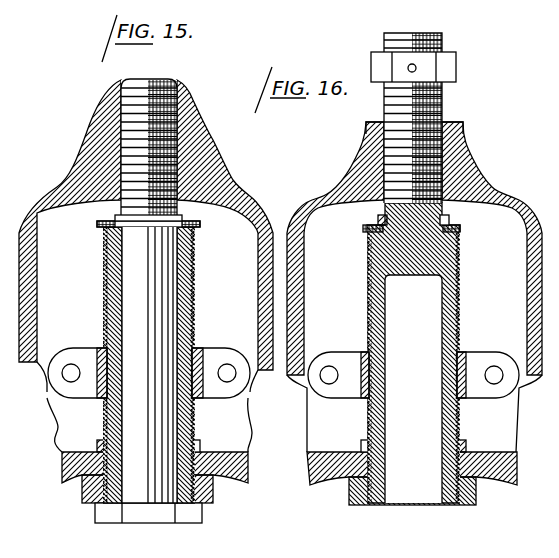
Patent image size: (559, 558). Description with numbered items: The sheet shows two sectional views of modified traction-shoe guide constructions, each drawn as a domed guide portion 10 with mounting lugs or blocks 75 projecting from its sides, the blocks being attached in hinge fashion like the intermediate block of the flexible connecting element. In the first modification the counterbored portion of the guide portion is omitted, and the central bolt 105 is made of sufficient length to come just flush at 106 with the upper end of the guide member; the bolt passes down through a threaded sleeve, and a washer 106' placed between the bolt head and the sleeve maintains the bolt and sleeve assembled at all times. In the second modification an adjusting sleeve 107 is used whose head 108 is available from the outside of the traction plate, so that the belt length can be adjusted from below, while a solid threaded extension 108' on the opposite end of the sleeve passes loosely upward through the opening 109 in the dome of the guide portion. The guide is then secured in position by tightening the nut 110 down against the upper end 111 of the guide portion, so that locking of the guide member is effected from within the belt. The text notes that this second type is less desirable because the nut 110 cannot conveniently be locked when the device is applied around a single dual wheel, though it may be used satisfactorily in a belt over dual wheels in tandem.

In FIG. 15, the housing body 10 is at (136, 301).
In FIG. 15, the intermediate block 75 is at (202, 350).
In FIG. 16, the intermediate block 75 is at (466, 352).
In FIG. 15, the central bolt 105 is at (138, 277).
In FIG. 15, the upper end of the guide member 106 is at (171, 288).
In FIG. 15, the washer 106' is at (179, 231).
In FIG. 16, the adjusting sleeve 107 is at (372, 310).
In FIG. 16, the head 108 is at (412, 506).
In FIG. 16, the solid threaded extension 108' is at (439, 118).
In FIG. 16, the opening 109 is at (379, 157).
In FIG. 16, the nut 110 is at (442, 68).
In FIG. 16, the upper end 111 is at (374, 122).